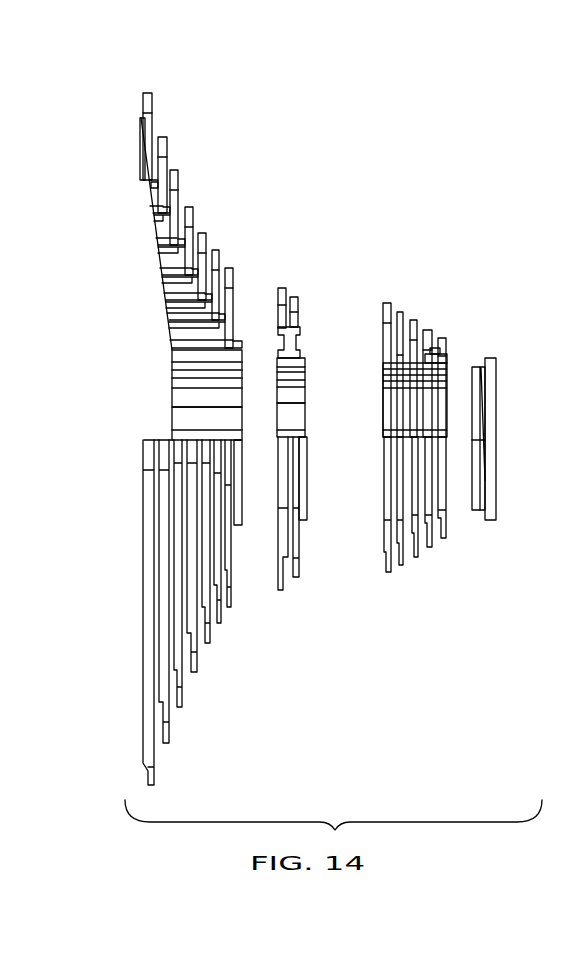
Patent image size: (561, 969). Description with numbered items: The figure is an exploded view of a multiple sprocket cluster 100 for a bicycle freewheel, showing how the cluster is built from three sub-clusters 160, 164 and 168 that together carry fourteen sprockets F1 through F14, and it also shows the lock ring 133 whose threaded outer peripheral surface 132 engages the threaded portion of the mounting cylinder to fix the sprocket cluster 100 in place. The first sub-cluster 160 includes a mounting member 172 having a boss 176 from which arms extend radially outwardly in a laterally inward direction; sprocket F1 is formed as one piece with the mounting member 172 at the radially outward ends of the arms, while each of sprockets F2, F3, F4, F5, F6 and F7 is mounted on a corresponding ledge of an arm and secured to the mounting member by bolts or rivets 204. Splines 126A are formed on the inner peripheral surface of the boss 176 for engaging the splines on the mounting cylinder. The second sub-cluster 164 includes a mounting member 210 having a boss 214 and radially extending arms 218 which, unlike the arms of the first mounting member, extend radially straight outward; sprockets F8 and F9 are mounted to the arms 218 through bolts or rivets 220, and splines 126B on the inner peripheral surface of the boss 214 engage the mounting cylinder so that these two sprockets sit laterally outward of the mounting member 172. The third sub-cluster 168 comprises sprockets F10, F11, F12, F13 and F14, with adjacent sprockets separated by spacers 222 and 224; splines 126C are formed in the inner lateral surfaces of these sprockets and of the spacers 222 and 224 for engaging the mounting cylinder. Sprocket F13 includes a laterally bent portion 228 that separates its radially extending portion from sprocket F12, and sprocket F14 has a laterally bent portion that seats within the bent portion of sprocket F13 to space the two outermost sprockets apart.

The multiple sprocket cluster 100 is at (292, 116).
The sub-cluster 160 is at (184, 95).
The sub-cluster 164 is at (293, 265).
The sub-cluster 168 is at (405, 282).
The mounting member 172 is at (147, 410).
The boss 176 is at (172, 358).
The bolts or rivets 204 is at (170, 284).
The mounting member 210 is at (267, 356).
The boss 214 is at (306, 392).
The radially extending arms 218 is at (287, 316).
The bolts or rivets 220 is at (300, 343).
The spacer 222 is at (393, 458).
The spacer 224 is at (408, 480).
The laterally bent portion 228 is at (418, 356).
The threaded outer peripheral surface 132 is at (478, 365).
The lock ring 133 is at (497, 408).
The splines 126A is at (182, 426).
The splines 126B is at (300, 424).
The splines 126C is at (484, 447).
The sprocket F1 is at (146, 784).
The sprocket F2 is at (166, 744).
The sprocket F3 is at (180, 708).
The sprocket F4 is at (194, 673).
The sprocket F5 is at (208, 644).
The sprocket F6 is at (220, 624).
The sprocket F7 is at (231, 606).
The sprocket F8 is at (281, 590).
The sprocket F9 is at (297, 578).
The sprocket F10 is at (389, 572).
The sprocket F11 is at (401, 565).
The sprocket F12 is at (416, 558).
The sprocket F13 is at (430, 547).
The sprocket F14 is at (444, 538).